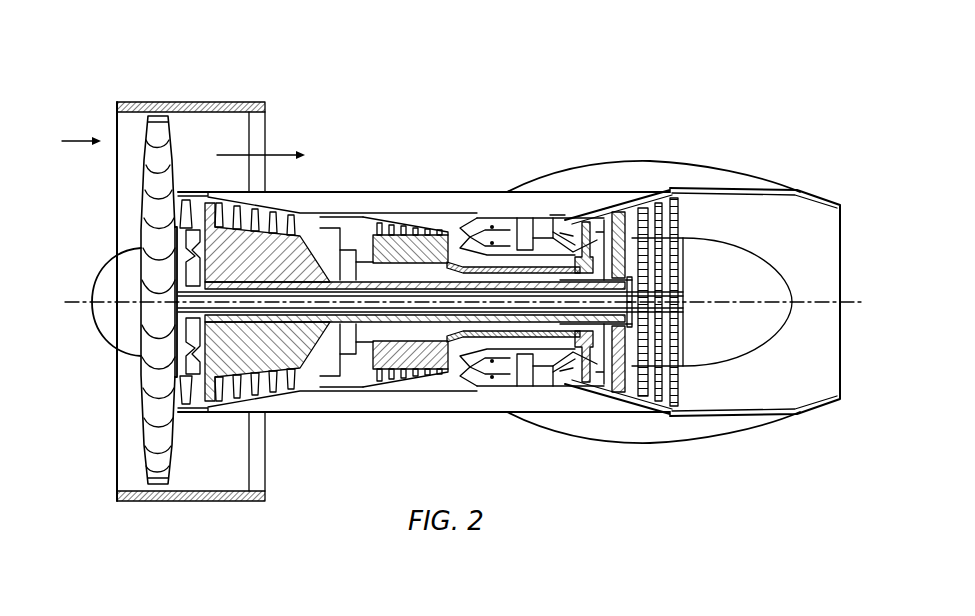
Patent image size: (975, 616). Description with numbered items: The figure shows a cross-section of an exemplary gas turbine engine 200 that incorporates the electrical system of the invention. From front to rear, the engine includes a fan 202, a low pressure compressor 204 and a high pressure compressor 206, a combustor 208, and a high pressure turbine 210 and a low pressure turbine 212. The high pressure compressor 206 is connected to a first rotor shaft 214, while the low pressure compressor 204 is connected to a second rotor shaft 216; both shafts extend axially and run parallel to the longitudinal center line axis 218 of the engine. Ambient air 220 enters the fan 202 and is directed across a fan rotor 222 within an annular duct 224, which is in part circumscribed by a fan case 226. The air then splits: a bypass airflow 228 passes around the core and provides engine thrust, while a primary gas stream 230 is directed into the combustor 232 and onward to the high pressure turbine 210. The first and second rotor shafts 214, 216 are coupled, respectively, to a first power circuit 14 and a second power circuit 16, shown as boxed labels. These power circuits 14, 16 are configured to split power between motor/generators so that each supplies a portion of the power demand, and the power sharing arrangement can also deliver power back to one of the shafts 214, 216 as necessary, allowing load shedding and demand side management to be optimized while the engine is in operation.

The gas turbine engine 200 is at (613, 33).
The fan 202 is at (127, 193).
The low pressure compressor 204 is at (287, 247).
The high pressure compressor 206 is at (412, 379).
The combustor 208 is at (502, 380).
The high pressure turbine 210 is at (587, 223).
The low pressure turbine 212 is at (680, 203).
The first rotor shaft 214 is at (523, 337).
The second rotor shaft 216 is at (602, 377).
The longitudinal center line axis 218 is at (858, 297).
The ambient air 220 is at (82, 138).
The fan rotor 222 is at (158, 478).
The annular duct 224 is at (252, 465).
The fan case 226 is at (203, 497).
The bypass airflow 228 is at (296, 152).
The primary gas stream 230 is at (373, 217).
The combustor 232 is at (502, 228).
The first power circuit 14 is at (557, 215).
The second power circuit 16 is at (607, 200).